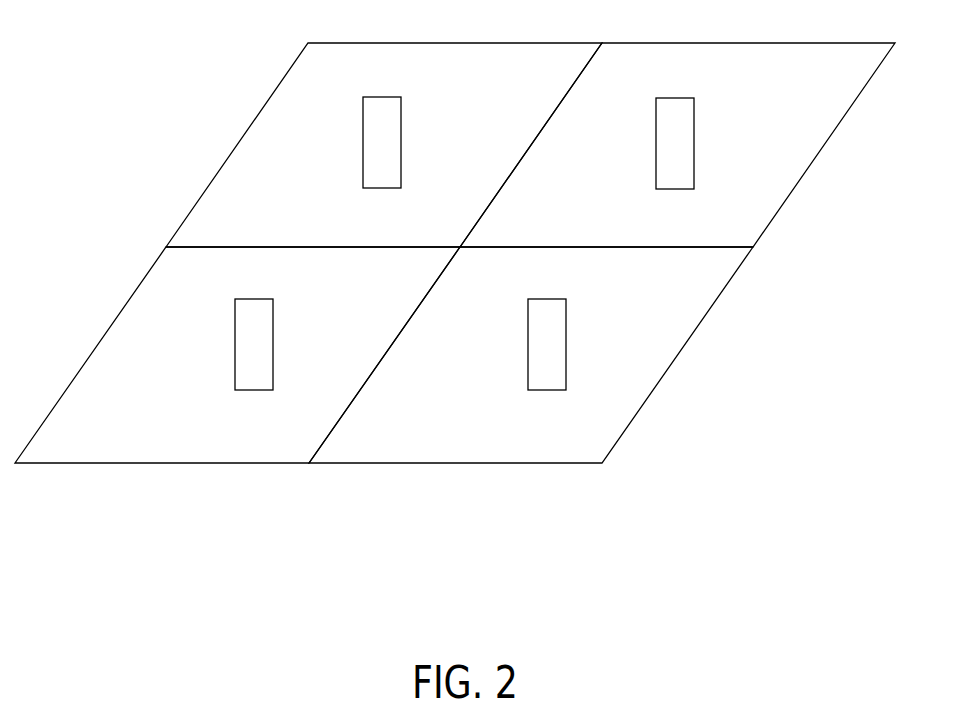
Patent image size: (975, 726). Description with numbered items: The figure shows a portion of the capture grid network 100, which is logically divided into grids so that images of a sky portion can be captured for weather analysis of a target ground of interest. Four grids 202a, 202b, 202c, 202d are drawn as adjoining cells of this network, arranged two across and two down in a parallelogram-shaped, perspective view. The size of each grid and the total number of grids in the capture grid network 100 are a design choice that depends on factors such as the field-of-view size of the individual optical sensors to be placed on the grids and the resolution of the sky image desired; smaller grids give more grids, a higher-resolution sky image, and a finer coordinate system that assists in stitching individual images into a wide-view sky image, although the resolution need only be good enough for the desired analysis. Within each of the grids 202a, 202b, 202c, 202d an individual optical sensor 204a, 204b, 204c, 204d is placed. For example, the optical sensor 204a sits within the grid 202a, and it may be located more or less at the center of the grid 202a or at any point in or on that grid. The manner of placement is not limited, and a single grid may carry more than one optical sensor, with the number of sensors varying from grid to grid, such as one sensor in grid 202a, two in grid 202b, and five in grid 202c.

The capture grid network 100 is at (471, 319).
The grid 202a is at (328, 60).
The grid 202b is at (757, 70).
The grid 202c is at (198, 280).
The grid 202d is at (675, 279).
The optical sensor 204a is at (401, 144).
The optical sensor 204b is at (694, 179).
The optical sensor 204c is at (273, 373).
The optical sensor 204d is at (562, 372).